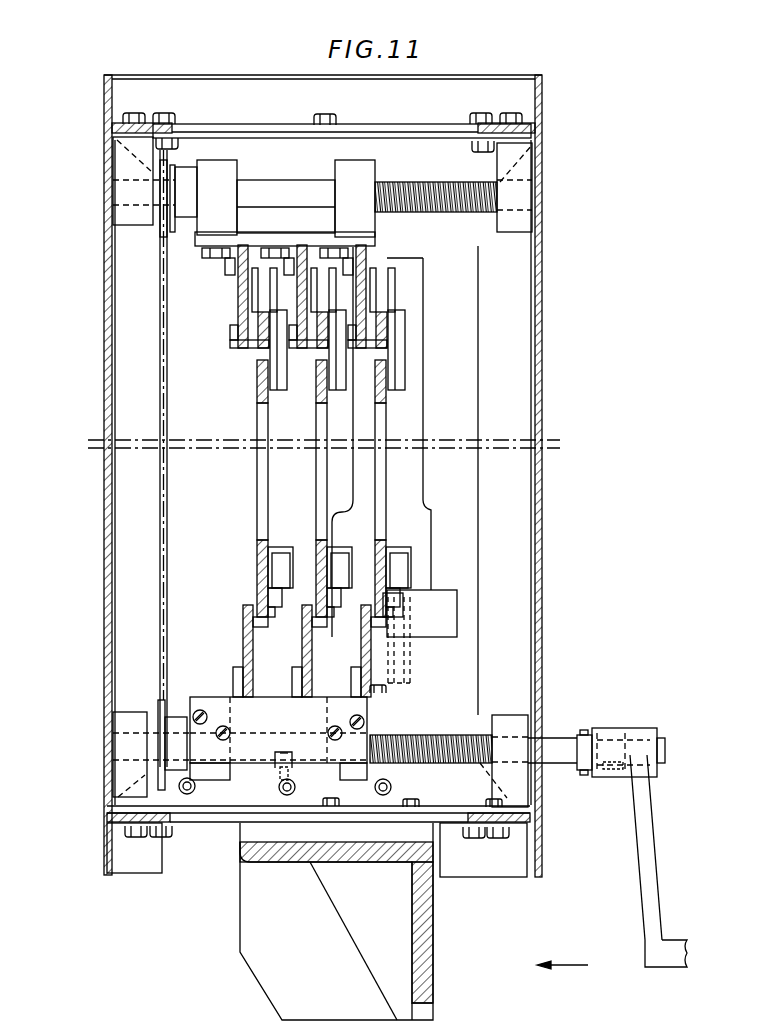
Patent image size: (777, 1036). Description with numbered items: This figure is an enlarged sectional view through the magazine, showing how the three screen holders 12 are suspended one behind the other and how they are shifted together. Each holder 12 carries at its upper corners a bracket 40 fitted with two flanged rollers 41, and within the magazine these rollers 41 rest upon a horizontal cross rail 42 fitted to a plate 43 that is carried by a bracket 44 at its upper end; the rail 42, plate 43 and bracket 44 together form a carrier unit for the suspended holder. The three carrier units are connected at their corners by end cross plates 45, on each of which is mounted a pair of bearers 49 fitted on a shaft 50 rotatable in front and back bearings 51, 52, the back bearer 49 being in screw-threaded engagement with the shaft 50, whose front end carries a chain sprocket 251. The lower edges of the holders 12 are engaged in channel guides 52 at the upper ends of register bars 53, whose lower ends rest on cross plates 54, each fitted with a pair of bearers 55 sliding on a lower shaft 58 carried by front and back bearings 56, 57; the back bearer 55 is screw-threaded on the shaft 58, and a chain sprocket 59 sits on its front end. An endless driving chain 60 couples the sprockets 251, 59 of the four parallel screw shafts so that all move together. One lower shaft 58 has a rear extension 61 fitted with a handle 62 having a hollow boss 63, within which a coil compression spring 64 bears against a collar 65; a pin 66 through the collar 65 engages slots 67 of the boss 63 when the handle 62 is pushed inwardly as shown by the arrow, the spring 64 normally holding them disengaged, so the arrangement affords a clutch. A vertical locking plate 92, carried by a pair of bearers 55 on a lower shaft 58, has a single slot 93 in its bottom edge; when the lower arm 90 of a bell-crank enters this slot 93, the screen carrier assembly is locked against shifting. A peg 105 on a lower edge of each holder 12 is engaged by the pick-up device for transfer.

The holder 12 is at (387, 400).
The bracket 40 is at (398, 330).
The flanged roller 41 is at (383, 290).
The cross rail 42 is at (385, 327).
The plate 43 is at (370, 262).
The bracket 44 is at (370, 247).
The end cross plate 45 is at (283, 237).
The bearer 49 is at (223, 163).
The shaft 50 is at (265, 203).
The front bearing 51 is at (147, 157).
The back bearing 52 is at (525, 175).
The chain sprocket 251 is at (168, 240).
The register bar 53 is at (245, 647).
The cross plate 54 is at (372, 705).
The bearer 55 is at (231, 776).
The front bearing 56 is at (131, 716).
The back bearing 57 is at (504, 717).
The shaft 58 is at (428, 763).
The chain sprocket 59 is at (162, 790).
The endless driving chain 60 is at (168, 640).
The rear extension 61 is at (562, 753).
The handle 62 is at (645, 848).
The hollow boss 63 is at (635, 737).
The coil compression spring 64 is at (612, 770).
The collar 65 is at (577, 745).
The pin 66 is at (583, 730).
The slot 67 is at (597, 730).
The lower arm 90 is at (280, 753).
The locking plate 92 is at (218, 752).
The slot 93 is at (292, 762).
The peg 105 is at (280, 600).